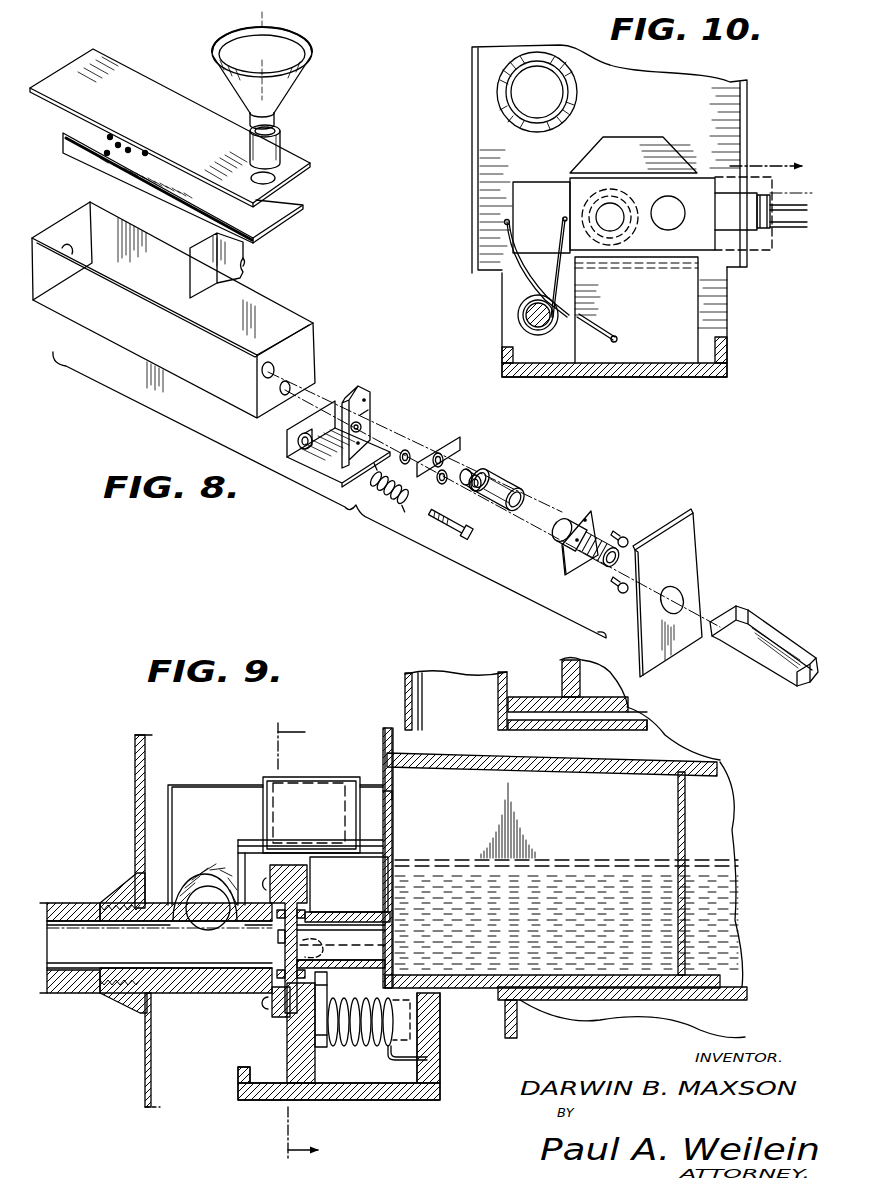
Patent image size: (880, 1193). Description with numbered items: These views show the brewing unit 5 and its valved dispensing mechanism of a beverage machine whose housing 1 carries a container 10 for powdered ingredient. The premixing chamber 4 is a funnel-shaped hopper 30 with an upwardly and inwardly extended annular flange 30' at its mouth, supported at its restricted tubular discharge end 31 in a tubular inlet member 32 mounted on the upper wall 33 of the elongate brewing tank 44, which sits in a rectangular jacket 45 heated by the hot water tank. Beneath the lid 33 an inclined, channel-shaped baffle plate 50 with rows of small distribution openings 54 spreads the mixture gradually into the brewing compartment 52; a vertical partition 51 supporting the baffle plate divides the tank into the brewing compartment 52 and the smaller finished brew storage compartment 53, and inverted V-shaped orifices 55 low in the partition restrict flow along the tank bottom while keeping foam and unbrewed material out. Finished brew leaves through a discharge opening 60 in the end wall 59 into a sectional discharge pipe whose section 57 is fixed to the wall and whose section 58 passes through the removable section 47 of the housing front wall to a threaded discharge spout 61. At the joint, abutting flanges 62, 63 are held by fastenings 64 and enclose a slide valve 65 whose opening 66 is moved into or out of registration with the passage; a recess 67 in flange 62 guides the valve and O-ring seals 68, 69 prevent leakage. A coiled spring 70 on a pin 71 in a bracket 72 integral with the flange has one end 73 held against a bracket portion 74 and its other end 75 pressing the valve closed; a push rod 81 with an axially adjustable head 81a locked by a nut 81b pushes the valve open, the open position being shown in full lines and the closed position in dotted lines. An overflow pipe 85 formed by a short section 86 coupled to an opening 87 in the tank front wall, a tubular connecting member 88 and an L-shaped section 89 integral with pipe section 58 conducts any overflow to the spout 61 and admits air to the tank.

In FIG. 9, the housing 1 is at (118, 921).
In FIG. 8, the premixing chamber 4 is at (272, 90).
In FIG. 8, the brewing unit 5 is at (319, 420).
In FIG. 10, the brewing unit 5 is at (616, 231).
In FIG. 9, the brewing unit 5 is at (538, 854).
In FIG. 9, the container 10 is at (286, 942).
In FIG. 8, the funnel-shaped hopper 30 is at (272, 64).
In FIG. 8, the annular flange 30' is at (285, 41).
In FIG. 8, the restricted tubular discharge end 31 is at (273, 118).
In FIG. 8, the tubular inlet member 32 is at (281, 146).
In FIG. 9, the tubular inlet member 32 is at (405, 700).
In FIG. 8, the upper wall 33 is at (162, 92).
In FIG. 8, the brewing tank 44 is at (161, 372).
In FIG. 9, the brewing tank 44 is at (674, 757).
In FIG. 10, the rectangular jacket 45 is at (470, 160).
In FIG. 9, the rectangular jacket 45 is at (631, 1004).
In FIG. 8, the removable section 47 is at (698, 562).
In FIG. 9, the removable section 47 is at (136, 825).
In FIG. 8, the baffle plate 50 is at (195, 188).
In FIG. 9, the baffle plate 50 is at (590, 754).
In FIG. 8, the vertical partition 51 is at (241, 255).
In FIG. 9, the vertical partition 51 is at (678, 830).
In FIG. 9, the brewing compartment 52 is at (710, 811).
In FIG. 9, the finished brew storage compartment 53 is at (550, 819).
In FIG. 8, the distribution openings 54 is at (96, 148).
In FIG. 8, the orifices 55 is at (220, 283).
In FIG. 9, the orifices 55 is at (688, 967).
In FIG. 8, the pipe section 57 is at (336, 404).
In FIG. 10, the pipe section 57 is at (598, 189).
In FIG. 9, the pipe section 57 is at (362, 908).
In FIG. 8, the pipe section 58 is at (602, 540).
In FIG. 9, the pipe section 58 is at (159, 935).
In FIG. 9, the end wall 59 is at (393, 857).
In FIG. 9, the discharge opening 60 is at (395, 953).
In FIG. 8, the discharge spout 61 is at (781, 650).
In FIG. 9, the discharge spout 61 is at (60, 992).
In FIG. 8, the flange 62 is at (362, 391).
In FIG. 10, the flange 62 is at (665, 146).
In FIG. 9, the flange 62 is at (296, 924).
In FIG. 8, the flange 63 is at (596, 534).
In FIG. 9, the flange 63 is at (283, 866).
In FIG. 9, the fastenings 64 is at (268, 885).
In FIG. 8, the slide valve 65 is at (462, 440).
In FIG. 10, the slide valve 65 is at (545, 214).
In FIG. 9, the slide valve 65 is at (283, 940).
In FIG. 8, the opening 66 is at (441, 452).
In FIG. 10, the opening 66 is at (665, 230).
In FIG. 9, the opening 66 is at (273, 990).
In FIG. 9, the recess 67 is at (328, 995).
In FIG. 8, the O-ring seal 68 is at (408, 450).
In FIG. 9, the O-ring seal 68 is at (306, 910).
In FIG. 8, the O-ring seal 69 is at (450, 471).
In FIG. 9, the O-ring seal 69 is at (280, 985).
In FIG. 8, the coiled spring 70 is at (390, 500).
In FIG. 10, the coiled spring 70 is at (505, 314).
In FIG. 9, the coiled spring 70 is at (399, 1054).
In FIG. 8, the pin 71 is at (462, 541).
In FIG. 10, the pin 71 is at (526, 319).
In FIG. 9, the pin 71 is at (330, 1028).
In FIG. 8, the bracket 72 is at (312, 477).
In FIG. 10, the bracket 72 is at (606, 378).
In FIG. 9, the bracket 72 is at (335, 1054).
In FIG. 10, the spring end 73 is at (619, 342).
In FIG. 9, the spring end 73 is at (430, 1062).
In FIG. 8, the bracket portion 74 is at (366, 431).
In FIG. 10, the bracket portion 74 is at (728, 315).
In FIG. 9, the bracket portion 74 is at (441, 1040).
In FIG. 10, the spring end 75 is at (505, 223).
In FIG. 9, the spring end 75 is at (320, 947).
In FIG. 10, the push rod 81 is at (763, 208).
In FIG. 10, the adjustable head 81a is at (735, 196).
In FIG. 10, the nut 81b is at (766, 231).
In FIG. 9, the angular sectional pipe 85 is at (308, 816).
In FIG. 8, the short pipe section 86 is at (481, 479).
In FIG. 9, the short pipe section 86 is at (373, 784).
In FIG. 9, the opening 87 is at (395, 790).
In FIG. 8, the tubular connecting member 88 is at (511, 496).
In FIG. 10, the tubular connecting member 88 is at (579, 90).
In FIG. 9, the tubular connecting member 88 is at (301, 777).
In FIG. 8, the L-shaped section 89 is at (566, 512).
In FIG. 9, the L-shaped section 89 is at (226, 785).